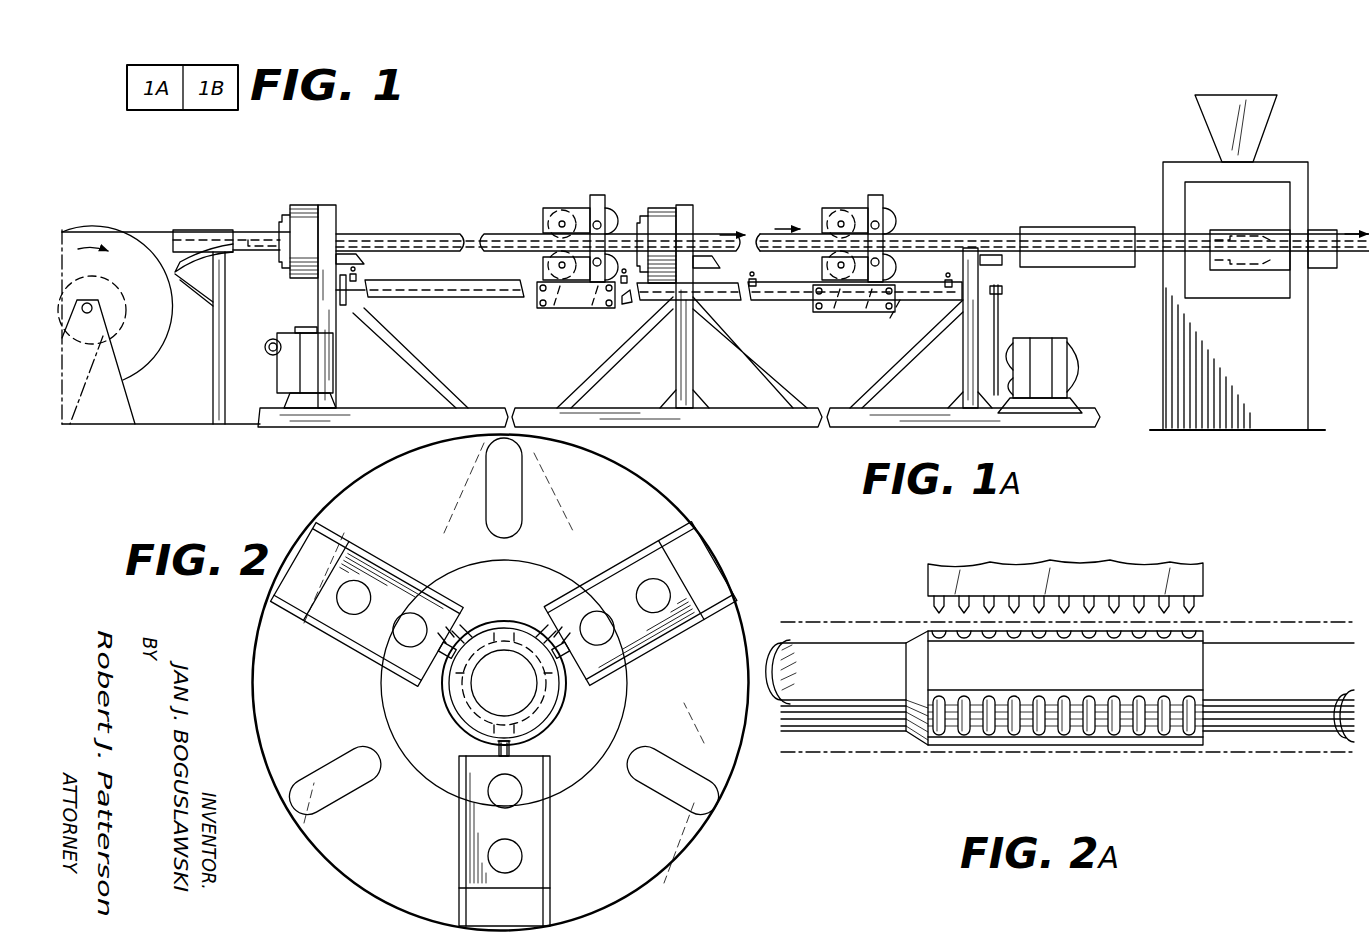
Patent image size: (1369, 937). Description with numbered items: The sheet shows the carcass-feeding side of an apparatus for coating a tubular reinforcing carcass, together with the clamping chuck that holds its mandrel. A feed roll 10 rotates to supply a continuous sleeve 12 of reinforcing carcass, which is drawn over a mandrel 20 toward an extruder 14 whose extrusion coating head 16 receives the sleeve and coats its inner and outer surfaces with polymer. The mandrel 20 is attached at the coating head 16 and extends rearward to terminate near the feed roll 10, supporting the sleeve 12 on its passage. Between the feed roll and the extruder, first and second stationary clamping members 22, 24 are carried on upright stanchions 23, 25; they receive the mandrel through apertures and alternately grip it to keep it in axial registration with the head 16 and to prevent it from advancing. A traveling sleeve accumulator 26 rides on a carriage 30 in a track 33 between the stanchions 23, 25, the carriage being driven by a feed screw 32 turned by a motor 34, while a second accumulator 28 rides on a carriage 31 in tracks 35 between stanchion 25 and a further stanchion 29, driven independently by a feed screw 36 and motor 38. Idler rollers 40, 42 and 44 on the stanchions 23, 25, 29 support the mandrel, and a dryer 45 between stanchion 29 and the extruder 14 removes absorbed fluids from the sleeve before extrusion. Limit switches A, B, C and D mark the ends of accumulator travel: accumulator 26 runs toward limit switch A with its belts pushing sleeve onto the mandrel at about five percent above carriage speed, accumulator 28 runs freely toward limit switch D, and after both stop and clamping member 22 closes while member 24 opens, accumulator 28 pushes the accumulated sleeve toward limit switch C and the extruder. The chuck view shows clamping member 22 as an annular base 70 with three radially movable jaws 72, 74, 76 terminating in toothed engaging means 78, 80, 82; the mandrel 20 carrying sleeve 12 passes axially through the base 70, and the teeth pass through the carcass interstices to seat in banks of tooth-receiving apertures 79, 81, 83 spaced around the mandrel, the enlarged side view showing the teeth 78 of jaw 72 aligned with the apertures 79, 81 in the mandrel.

In FIG. 1A, the feed roll 10 is at (155, 344).
In FIG. 1A, the reinforcing carcass sleeve 12 is at (143, 230).
In FIG. 2, the reinforcing carcass sleeve 12 is at (504, 644).
In FIG. 2A, the reinforcing carcass sleeve 12 is at (830, 620).
In FIG. 1A, the extruder 14 is at (1296, 155).
In FIG. 1A, the extrusion coating head 16 is at (1322, 230).
In FIG. 1A, the mandrel 20 is at (462, 233).
In FIG. 2, the mandrel 20 is at (521, 683).
In FIG. 2A, the mandrel 20 is at (1054, 688).
In FIG. 1A, the stationary clamping member 22 is at (303, 205).
In FIG. 2, the stationary clamping member 22 is at (725, 472).
In FIG. 1A, the upright stanchion 23 is at (330, 205).
In FIG. 1A, the stationary clamping member 24 is at (660, 207).
In FIG. 1A, the upright stanchion 25 is at (686, 205).
In FIG. 1A, the traveling sleeve accumulator 26 is at (562, 207).
In FIG. 1A, the traveling sleeve accumulator 28 is at (836, 207).
In FIG. 1A, the upright stanchion 29 is at (970, 248).
In FIG. 1A, the carriage 30 is at (566, 310).
In FIG. 1A, the carriage 31 is at (848, 312).
In FIG. 1A, the feed screw 32 is at (348, 296).
In FIG. 1A, the track 33 is at (466, 298).
In FIG. 1A, the motor 34 is at (300, 333).
In FIG. 1A, the tracks 35 is at (786, 300).
In FIG. 1A, the feed screw 36 is at (904, 318).
In FIG. 1A, the motor 38 is at (1065, 338).
In FIG. 1A, the idler roller 40 is at (360, 260).
In FIG. 1A, the idler roller 42 is at (720, 262).
In FIG. 1A, the idler roller 44 is at (995, 263).
In FIG. 1A, the dryer 45 is at (1090, 227).
In FIG. 1A, the limit switch A is at (358, 272).
In FIG. 1A, the limit switch B is at (624, 298).
In FIG. 1A, the limit switch C is at (756, 276).
In FIG. 1A, the limit switch D is at (946, 276).
In FIG. 2, the annular base 70 is at (372, 476).
In FIG. 2, the jaw 72 is at (374, 606).
In FIG. 2A, the jaw 72 is at (1072, 575).
In FIG. 2, the jaw 74 is at (634, 603).
In FIG. 2, the jaw 76 is at (525, 833).
In FIG. 2, the toothed engaging means 78 is at (485, 672).
In FIG. 2A, the toothed engaging means 78 is at (1196, 604).
In FIG. 2, the tooth-receiving apertures 79 is at (504, 683).
In FIG. 2A, the tooth-receiving apertures 79 is at (1172, 640).
In FIG. 2, the toothed engaging means 80 is at (504, 614).
In FIG. 2, the tooth-receiving apertures 81 is at (504, 629).
In FIG. 2A, the tooth-receiving apertures 81 is at (1068, 698).
In FIG. 2, the toothed engaging means 82 is at (471, 742).
In FIG. 2, the tooth-receiving apertures 83 is at (504, 683).